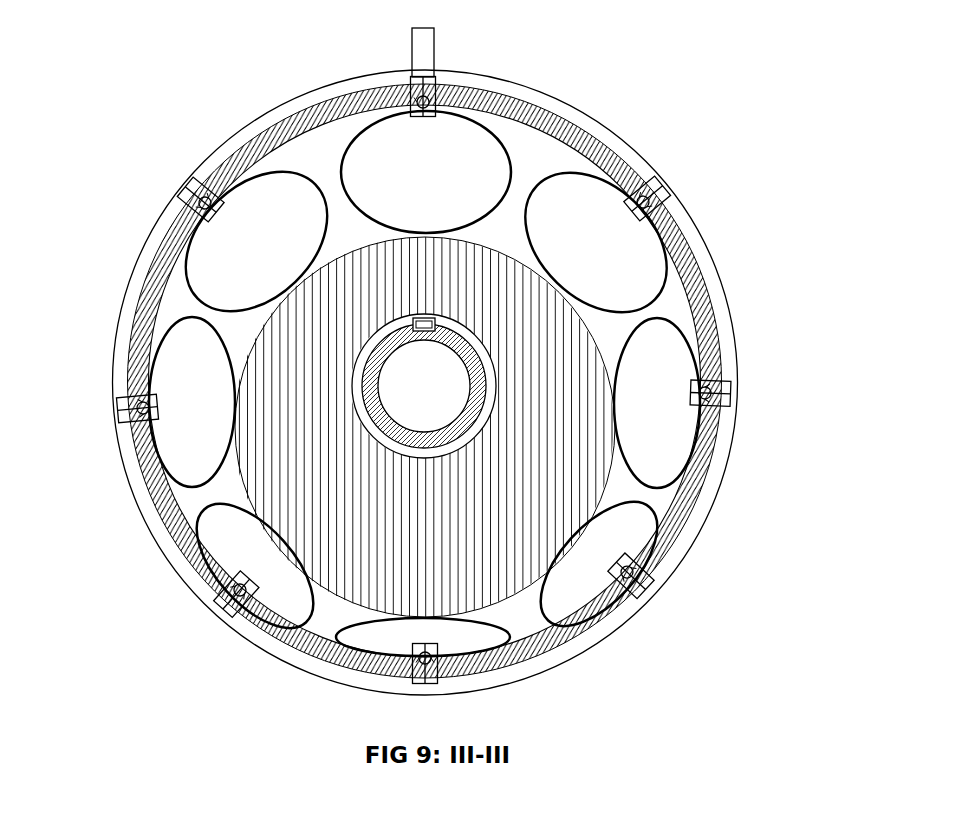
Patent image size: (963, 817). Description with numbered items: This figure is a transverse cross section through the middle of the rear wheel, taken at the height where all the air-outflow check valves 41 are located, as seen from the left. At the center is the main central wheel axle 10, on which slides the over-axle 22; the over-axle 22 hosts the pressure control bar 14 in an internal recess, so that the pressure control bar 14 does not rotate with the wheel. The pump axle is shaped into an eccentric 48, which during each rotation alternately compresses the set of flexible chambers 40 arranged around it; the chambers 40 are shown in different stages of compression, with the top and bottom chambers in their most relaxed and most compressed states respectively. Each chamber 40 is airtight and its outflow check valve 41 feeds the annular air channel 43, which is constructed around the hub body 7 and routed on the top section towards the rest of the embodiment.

The hub body 7 is at (246, 120).
The main central wheel axle 10 is at (457, 367).
The pressure control bar 14 is at (435, 318).
The over-axle 22 is at (482, 397).
The flexible chambers 40 is at (460, 173).
The air outflow check valves 41 is at (413, 92).
The air channel 43 is at (434, 48).
The pump eccentric 48 is at (505, 428).